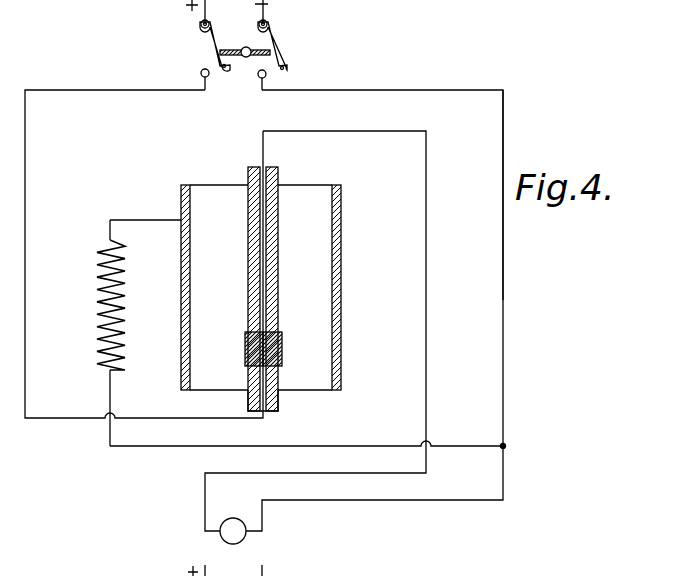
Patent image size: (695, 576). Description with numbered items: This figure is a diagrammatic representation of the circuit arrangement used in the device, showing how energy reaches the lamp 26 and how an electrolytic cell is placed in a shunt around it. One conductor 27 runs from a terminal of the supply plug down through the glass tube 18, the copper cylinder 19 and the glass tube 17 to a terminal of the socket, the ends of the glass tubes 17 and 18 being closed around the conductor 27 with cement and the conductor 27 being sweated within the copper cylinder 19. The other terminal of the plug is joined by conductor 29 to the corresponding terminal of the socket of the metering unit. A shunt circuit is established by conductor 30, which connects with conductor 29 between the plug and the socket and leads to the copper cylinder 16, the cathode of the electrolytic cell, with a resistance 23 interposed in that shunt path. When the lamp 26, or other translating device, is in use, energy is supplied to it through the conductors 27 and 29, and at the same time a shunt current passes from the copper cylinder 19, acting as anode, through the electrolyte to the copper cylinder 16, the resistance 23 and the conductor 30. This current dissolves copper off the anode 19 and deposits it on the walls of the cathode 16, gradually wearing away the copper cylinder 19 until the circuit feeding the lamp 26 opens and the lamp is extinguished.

The copper cylinder 16 is at (181, 316).
The glass tube 17 is at (283, 178).
The glass tube 18 is at (280, 403).
The copper cylinder 19 is at (283, 347).
The resistance 23 is at (97, 266).
The lamp 26 is at (248, 543).
The conductor 27 is at (106, 92).
The conductor 29 is at (504, 121).
The conductor 30 is at (452, 443).